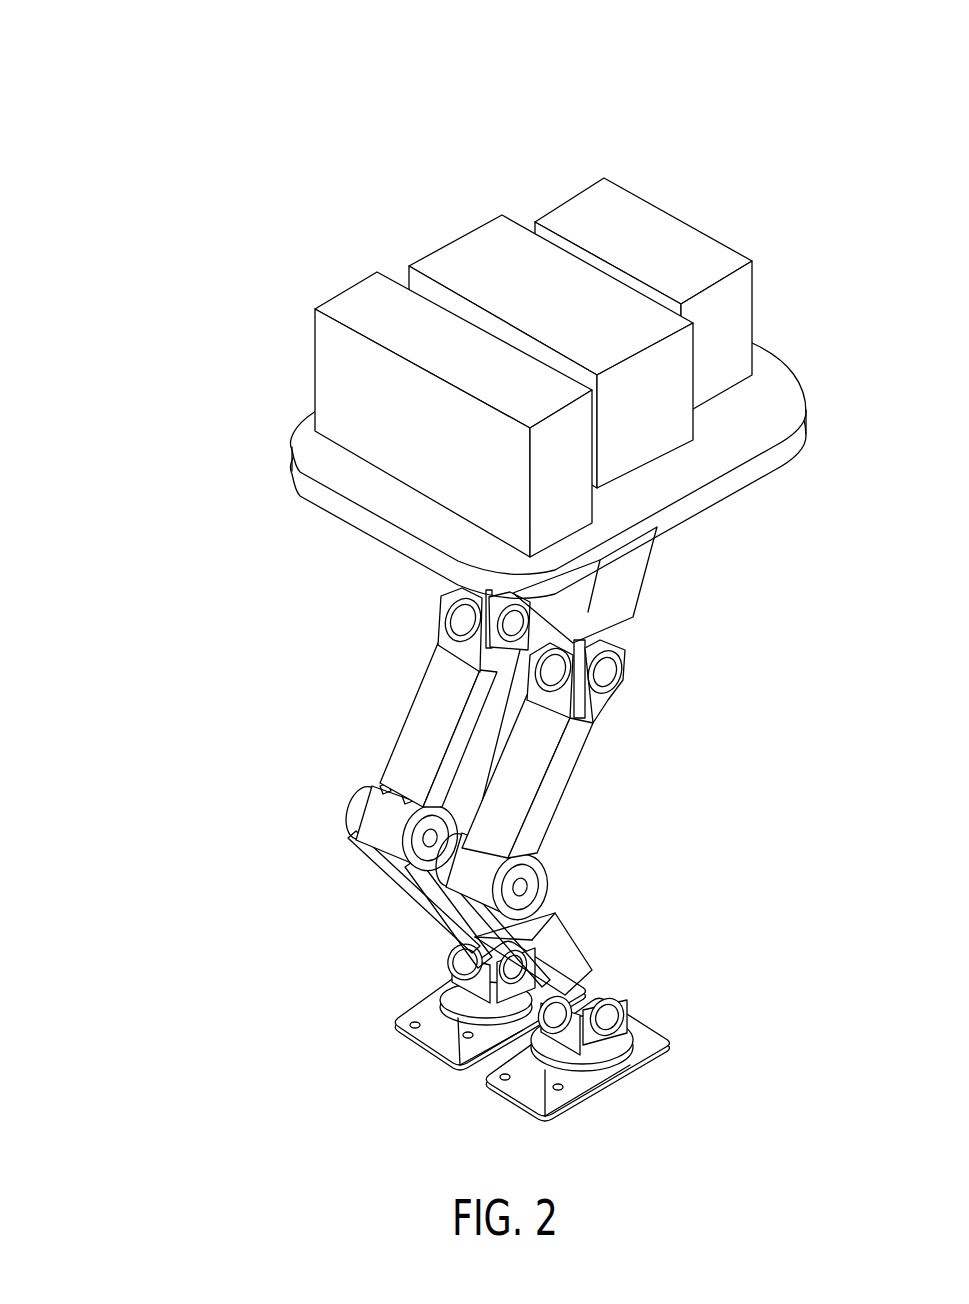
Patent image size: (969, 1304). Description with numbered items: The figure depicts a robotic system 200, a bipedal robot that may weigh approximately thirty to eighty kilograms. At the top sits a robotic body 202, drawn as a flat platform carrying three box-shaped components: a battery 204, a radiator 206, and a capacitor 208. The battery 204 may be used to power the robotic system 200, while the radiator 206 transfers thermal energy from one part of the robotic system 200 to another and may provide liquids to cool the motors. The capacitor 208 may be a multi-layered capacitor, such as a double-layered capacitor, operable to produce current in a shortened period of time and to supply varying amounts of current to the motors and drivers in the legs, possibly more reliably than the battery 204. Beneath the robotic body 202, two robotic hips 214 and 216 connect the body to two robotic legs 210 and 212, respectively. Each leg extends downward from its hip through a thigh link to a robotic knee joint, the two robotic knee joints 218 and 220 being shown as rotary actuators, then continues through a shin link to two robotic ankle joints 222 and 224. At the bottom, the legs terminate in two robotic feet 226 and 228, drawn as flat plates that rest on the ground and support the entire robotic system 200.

The robotic system 200 is at (112, 48).
The robotic body 202 is at (287, 157).
The battery 204 is at (548, 182).
The radiator 206 is at (431, 233).
The capacitor 208 is at (310, 295).
The robotic leg 210 is at (258, 633).
The robotic leg 212 is at (750, 688).
The robotic hip 214 is at (422, 598).
The robotic hip 216 is at (645, 643).
The robotic knee joint 218 is at (342, 797).
The robotic knee joint 220 is at (565, 873).
The robotic ankle joint 222 is at (427, 957).
The robotic ankle joint 224 is at (640, 1002).
The robotic foot 226 is at (403, 1060).
The robotic foot 228 is at (640, 1093).